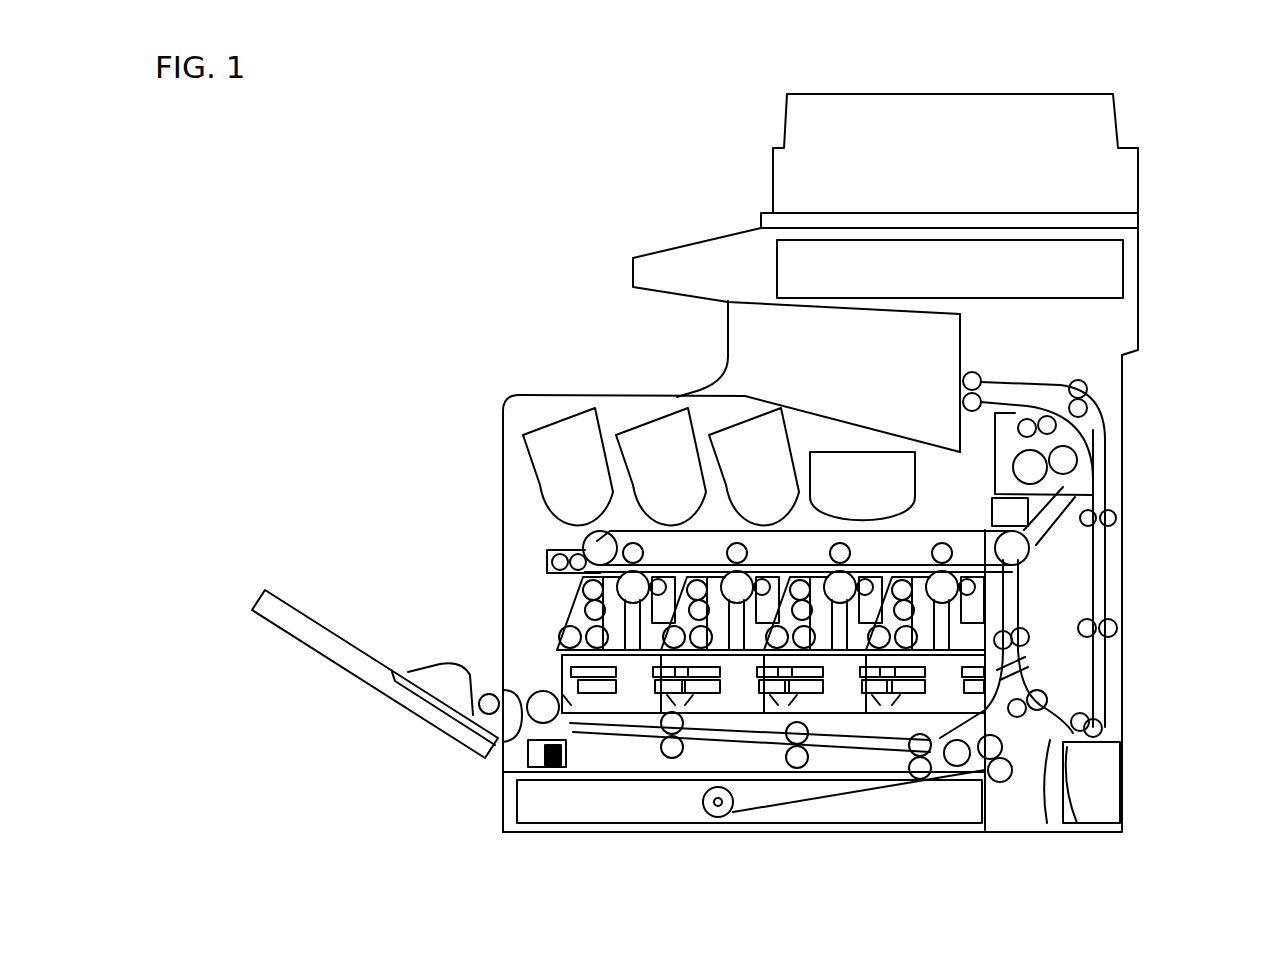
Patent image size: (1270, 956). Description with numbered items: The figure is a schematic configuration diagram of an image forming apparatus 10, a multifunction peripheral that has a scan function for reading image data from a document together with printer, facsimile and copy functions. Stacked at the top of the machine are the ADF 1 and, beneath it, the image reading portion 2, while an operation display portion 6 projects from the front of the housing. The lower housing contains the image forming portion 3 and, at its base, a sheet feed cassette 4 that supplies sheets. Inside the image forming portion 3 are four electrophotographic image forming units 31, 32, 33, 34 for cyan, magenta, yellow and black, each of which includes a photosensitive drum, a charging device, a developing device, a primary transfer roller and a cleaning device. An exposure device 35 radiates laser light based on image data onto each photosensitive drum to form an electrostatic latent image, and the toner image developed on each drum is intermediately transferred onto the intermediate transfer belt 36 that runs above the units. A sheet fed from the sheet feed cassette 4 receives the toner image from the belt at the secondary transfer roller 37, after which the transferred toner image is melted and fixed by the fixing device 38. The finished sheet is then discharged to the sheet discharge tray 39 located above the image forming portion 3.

The ADF 1 is at (1150, 140).
The image reading portion 2 is at (1142, 267).
The image forming portion 3 is at (512, 589).
The sheet feed cassette 4 is at (508, 801).
The operation display portion 6 is at (677, 239).
The image forming apparatus 10 is at (449, 213).
The image forming unit 31 is at (649, 561).
The image forming unit 32 is at (752, 561).
The image forming unit 33 is at (854, 561).
The image forming unit 34 is at (949, 561).
The exposure device 35 is at (566, 664).
The intermediate transfer belt 36 is at (932, 527).
The secondary transfer roller 37 is at (1026, 572).
The fixing device 38 is at (1073, 441).
The sheet discharge tray 39 is at (822, 413).